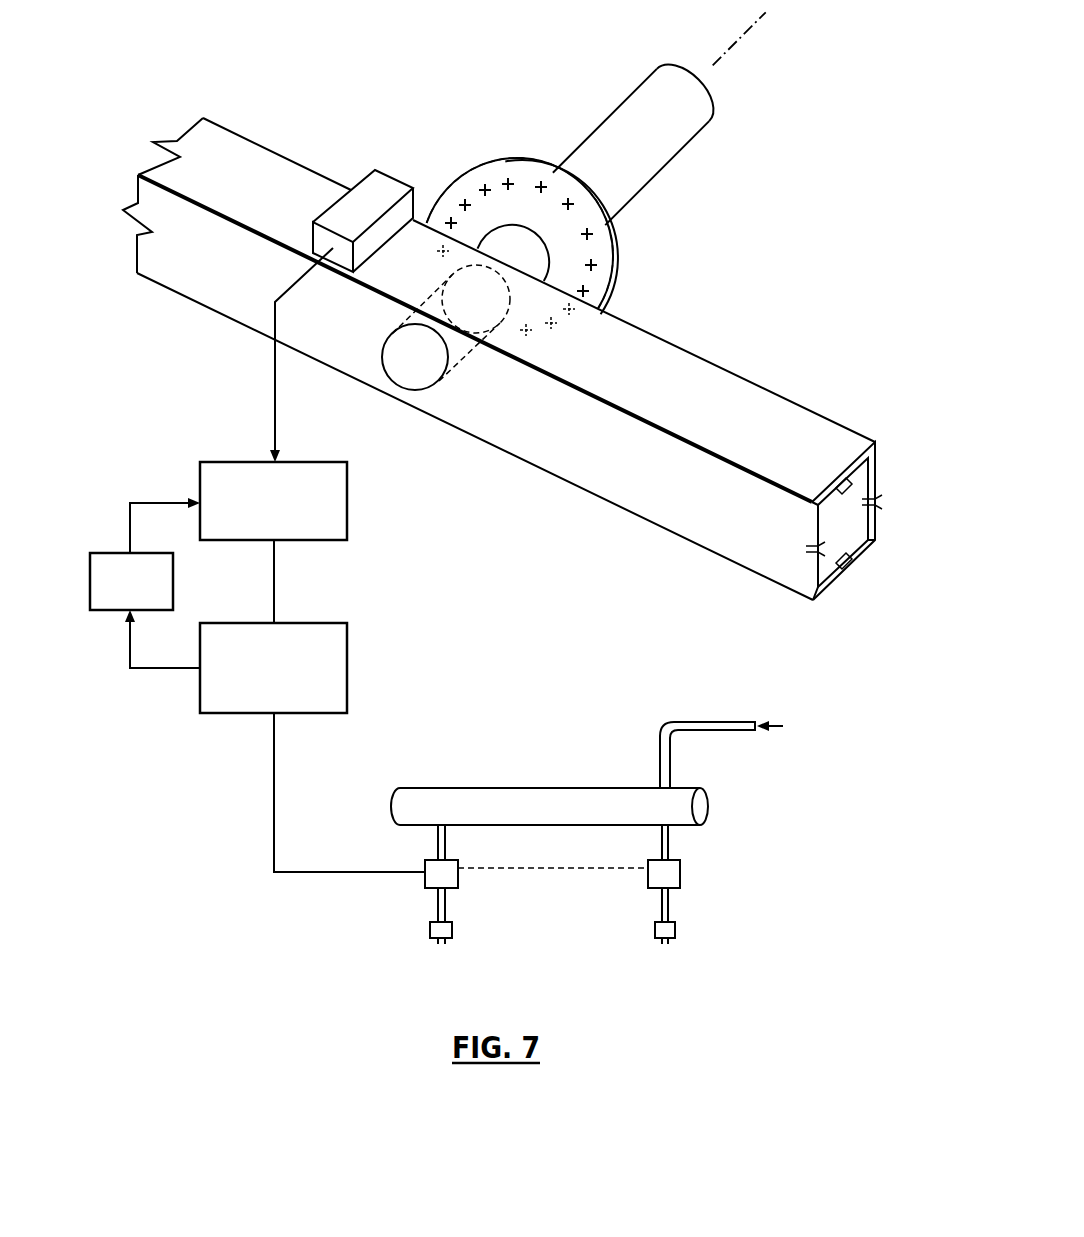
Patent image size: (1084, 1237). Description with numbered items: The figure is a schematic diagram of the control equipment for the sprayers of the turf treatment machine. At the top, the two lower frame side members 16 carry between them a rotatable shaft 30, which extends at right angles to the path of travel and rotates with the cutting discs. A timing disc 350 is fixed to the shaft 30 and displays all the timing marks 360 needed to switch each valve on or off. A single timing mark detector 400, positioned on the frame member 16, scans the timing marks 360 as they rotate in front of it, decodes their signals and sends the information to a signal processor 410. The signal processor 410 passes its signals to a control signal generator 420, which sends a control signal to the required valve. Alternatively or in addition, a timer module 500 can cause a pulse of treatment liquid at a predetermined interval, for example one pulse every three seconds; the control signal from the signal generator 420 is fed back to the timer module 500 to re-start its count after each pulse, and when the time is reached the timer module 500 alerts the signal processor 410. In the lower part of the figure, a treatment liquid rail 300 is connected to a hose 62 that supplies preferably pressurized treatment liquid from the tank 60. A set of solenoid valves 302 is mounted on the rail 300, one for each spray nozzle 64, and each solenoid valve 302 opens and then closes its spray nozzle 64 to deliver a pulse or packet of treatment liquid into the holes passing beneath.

The lower frame side member 16 is at (758, 417).
The rotatable shaft 30 is at (696, 117).
The timing disc 350 is at (615, 262).
The timing marks 360 is at (483, 185).
The timing mark detector 400 is at (378, 183).
The signal processor 410 is at (348, 487).
The control signal generator 420 is at (348, 668).
The timer module 500 is at (108, 553).
The treatment liquid rail 300 is at (543, 790).
The hose 62 is at (711, 722).
The tank 60 is at (845, 780).
The solenoid valves 302 is at (427, 880).
The spray nozzles 64 is at (452, 929).